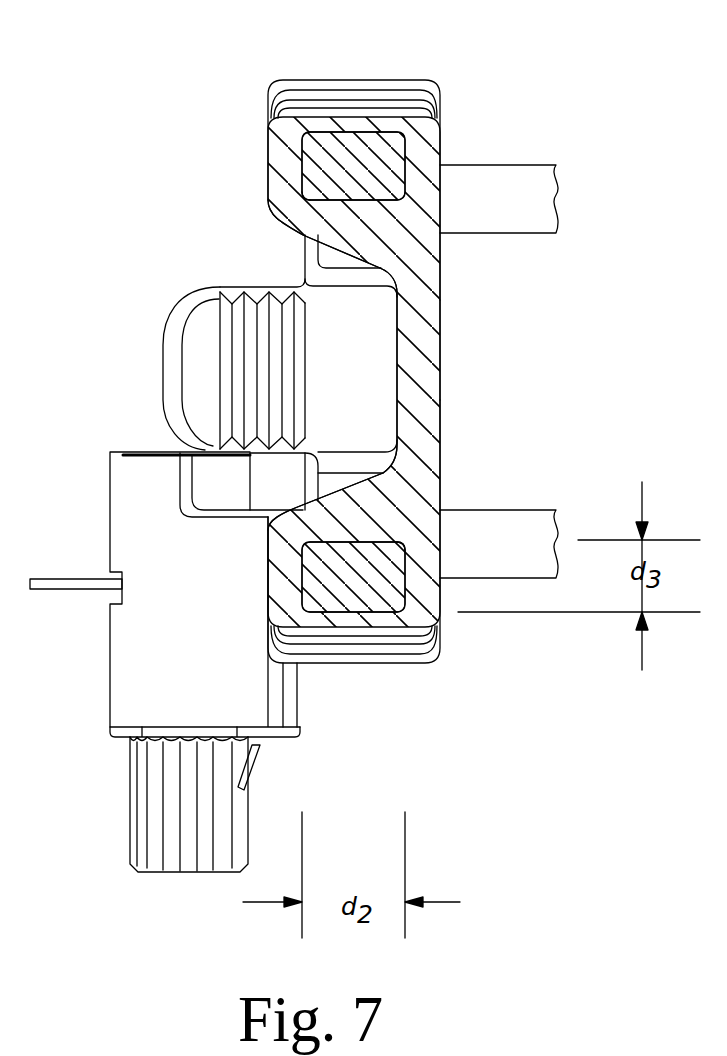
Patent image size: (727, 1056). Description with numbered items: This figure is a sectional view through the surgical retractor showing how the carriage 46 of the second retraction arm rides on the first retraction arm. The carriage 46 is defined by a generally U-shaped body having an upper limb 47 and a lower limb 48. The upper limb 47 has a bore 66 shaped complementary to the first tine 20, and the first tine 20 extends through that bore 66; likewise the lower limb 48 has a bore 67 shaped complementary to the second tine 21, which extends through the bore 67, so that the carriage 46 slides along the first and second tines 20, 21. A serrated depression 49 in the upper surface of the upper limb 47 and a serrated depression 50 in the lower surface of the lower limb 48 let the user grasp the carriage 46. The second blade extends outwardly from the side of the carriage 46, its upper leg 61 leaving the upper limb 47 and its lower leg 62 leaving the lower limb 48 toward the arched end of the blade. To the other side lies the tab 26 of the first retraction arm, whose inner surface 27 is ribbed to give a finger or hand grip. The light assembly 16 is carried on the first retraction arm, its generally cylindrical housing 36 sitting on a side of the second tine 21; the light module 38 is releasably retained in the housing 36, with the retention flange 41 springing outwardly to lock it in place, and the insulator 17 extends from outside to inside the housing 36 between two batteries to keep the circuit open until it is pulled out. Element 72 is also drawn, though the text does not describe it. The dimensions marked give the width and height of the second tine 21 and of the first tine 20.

The light assembly 16 is at (100, 438).
The insulator 17 is at (52, 582).
The first tine 20 is at (322, 156).
The second tine 21 is at (327, 580).
The tab 26 is at (168, 368).
The inner surface 27 is at (238, 337).
The housing 36 is at (133, 670).
The light module 38 is at (140, 802).
The retention flange 41 is at (248, 758).
The carriage 46 is at (441, 312).
The upper limb 47 is at (380, 80).
The lower limb 48 is at (372, 667).
The depression 49 is at (303, 102).
The depression 50 is at (440, 647).
The upper leg 61 is at (498, 173).
The lower leg 62 is at (498, 518).
The bore 66 is at (332, 192).
The bore 67 is at (397, 562).
The bracket 72 is at (246, 481).